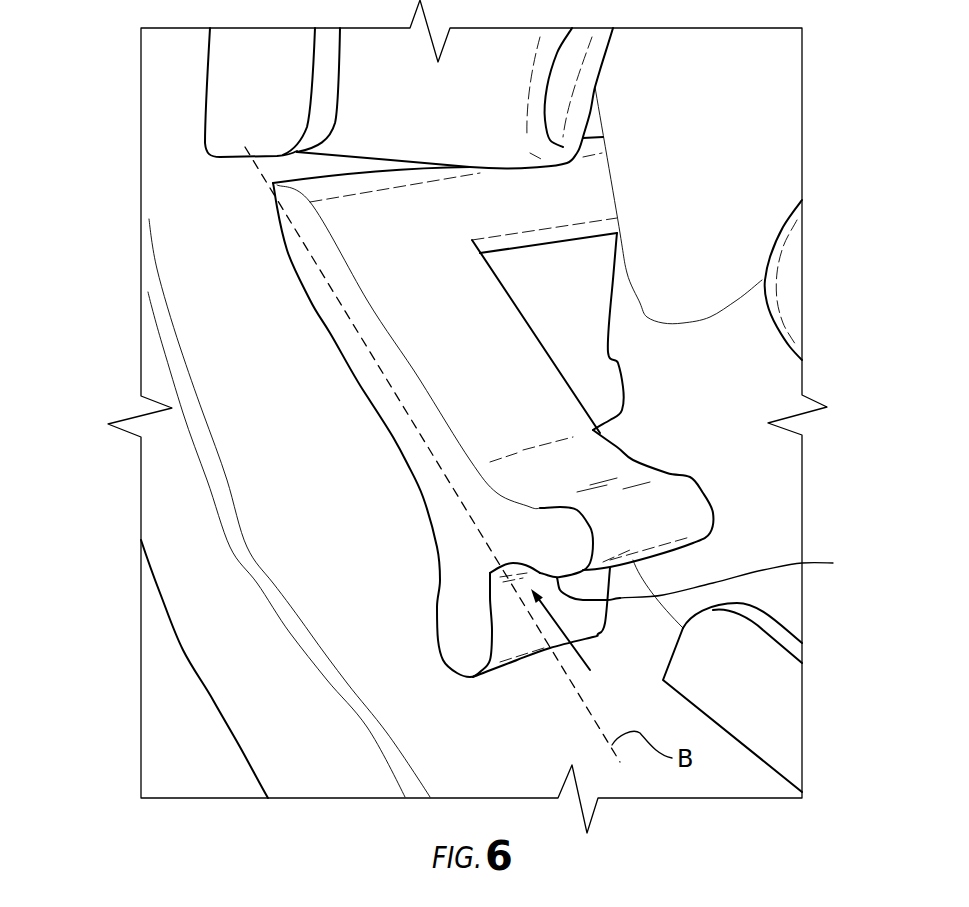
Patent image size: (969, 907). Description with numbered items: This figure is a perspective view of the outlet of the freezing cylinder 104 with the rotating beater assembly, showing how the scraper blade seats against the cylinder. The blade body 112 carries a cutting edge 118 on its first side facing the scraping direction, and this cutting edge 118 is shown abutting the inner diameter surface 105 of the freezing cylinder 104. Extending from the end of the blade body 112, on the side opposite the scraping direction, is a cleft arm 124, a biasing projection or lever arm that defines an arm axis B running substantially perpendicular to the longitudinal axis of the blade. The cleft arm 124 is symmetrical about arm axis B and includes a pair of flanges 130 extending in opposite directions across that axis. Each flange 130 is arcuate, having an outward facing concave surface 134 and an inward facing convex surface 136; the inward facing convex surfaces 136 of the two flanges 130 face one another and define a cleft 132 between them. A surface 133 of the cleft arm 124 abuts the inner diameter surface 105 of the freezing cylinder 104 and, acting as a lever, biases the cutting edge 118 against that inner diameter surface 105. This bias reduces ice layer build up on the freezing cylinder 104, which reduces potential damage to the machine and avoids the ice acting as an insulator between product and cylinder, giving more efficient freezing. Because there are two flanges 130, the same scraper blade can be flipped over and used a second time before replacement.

The freezing cylinder 104 is at (187, 247).
The inner diameter surface 105 is at (242, 254).
The blade body 112 is at (330, 373).
The cutting edge 118 is at (303, 180).
The cleft arm 124 is at (430, 378).
The flange 130 is at (675, 512).
The cleft 132 is at (560, 626).
The surface 133 is at (437, 660).
The outward facing concave surface 134 is at (600, 497).
The inward facing convex surface 136 is at (530, 733).